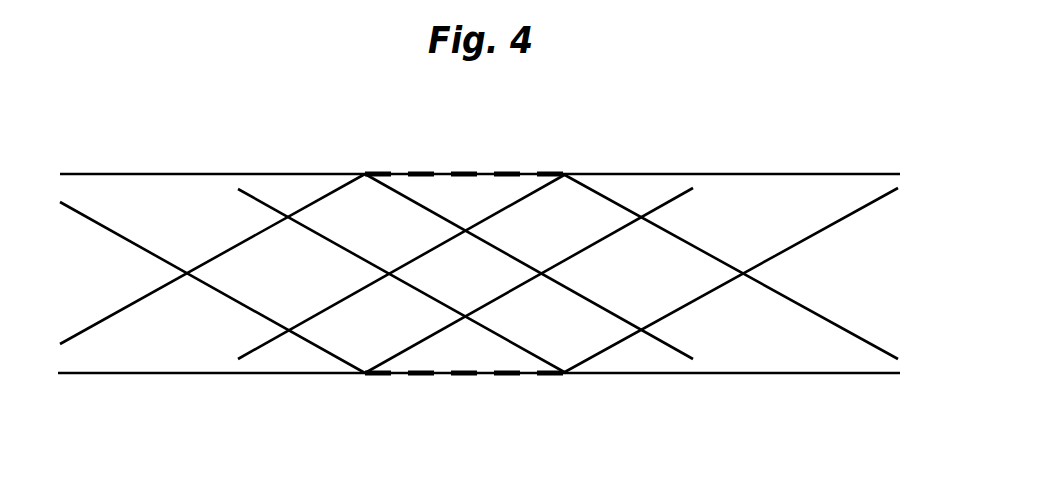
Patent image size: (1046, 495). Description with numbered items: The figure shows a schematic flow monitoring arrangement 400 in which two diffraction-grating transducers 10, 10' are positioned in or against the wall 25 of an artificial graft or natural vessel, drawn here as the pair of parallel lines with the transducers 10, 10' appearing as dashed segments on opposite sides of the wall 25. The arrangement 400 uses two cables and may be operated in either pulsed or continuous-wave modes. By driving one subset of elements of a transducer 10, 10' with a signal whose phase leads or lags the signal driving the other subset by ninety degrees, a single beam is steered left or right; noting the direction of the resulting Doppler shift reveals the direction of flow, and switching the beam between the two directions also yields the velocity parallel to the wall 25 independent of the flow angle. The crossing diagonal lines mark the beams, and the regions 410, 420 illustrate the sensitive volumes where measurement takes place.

The arrangement 400 is at (253, 112).
The transducer 10 is at (464, 142).
The transducer 10' is at (464, 412).
The wall 25 is at (658, 173).
The region 410 is at (313, 273).
The region 420 is at (631, 273).